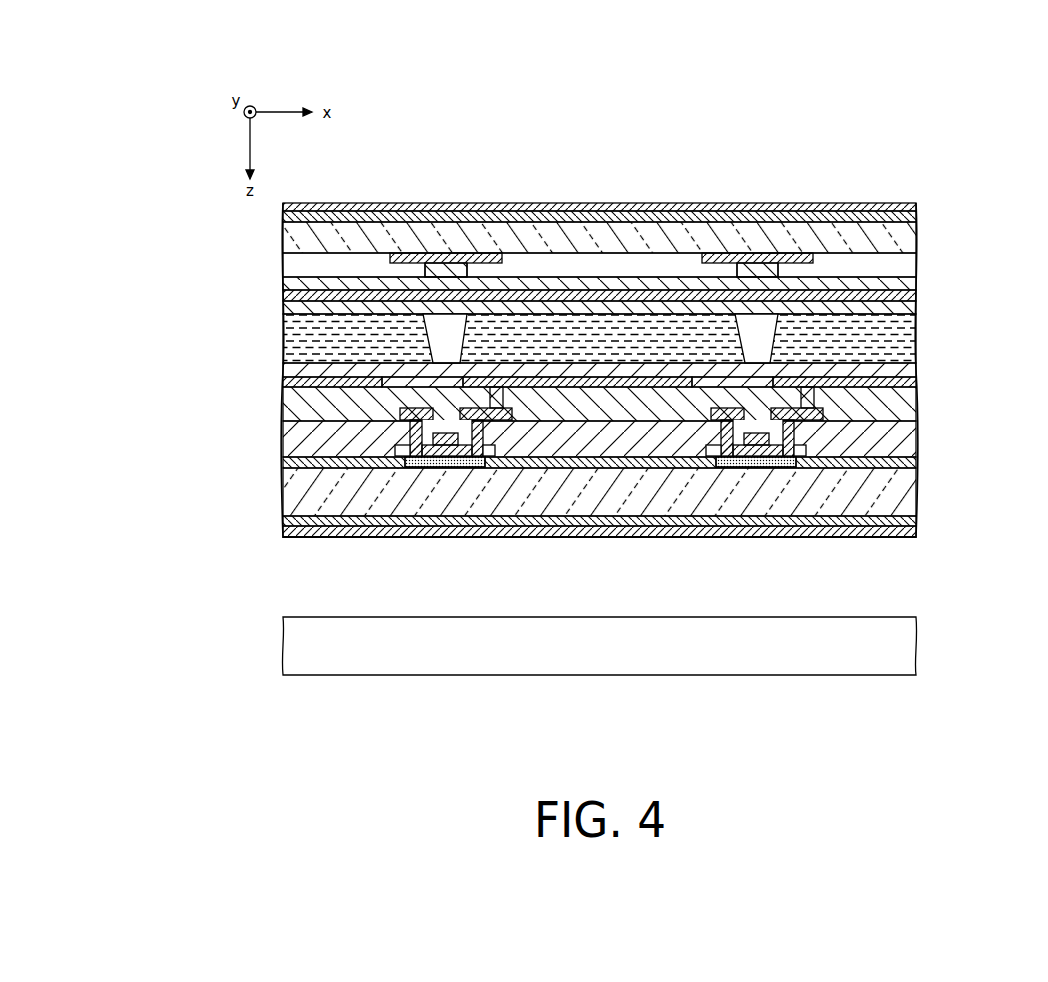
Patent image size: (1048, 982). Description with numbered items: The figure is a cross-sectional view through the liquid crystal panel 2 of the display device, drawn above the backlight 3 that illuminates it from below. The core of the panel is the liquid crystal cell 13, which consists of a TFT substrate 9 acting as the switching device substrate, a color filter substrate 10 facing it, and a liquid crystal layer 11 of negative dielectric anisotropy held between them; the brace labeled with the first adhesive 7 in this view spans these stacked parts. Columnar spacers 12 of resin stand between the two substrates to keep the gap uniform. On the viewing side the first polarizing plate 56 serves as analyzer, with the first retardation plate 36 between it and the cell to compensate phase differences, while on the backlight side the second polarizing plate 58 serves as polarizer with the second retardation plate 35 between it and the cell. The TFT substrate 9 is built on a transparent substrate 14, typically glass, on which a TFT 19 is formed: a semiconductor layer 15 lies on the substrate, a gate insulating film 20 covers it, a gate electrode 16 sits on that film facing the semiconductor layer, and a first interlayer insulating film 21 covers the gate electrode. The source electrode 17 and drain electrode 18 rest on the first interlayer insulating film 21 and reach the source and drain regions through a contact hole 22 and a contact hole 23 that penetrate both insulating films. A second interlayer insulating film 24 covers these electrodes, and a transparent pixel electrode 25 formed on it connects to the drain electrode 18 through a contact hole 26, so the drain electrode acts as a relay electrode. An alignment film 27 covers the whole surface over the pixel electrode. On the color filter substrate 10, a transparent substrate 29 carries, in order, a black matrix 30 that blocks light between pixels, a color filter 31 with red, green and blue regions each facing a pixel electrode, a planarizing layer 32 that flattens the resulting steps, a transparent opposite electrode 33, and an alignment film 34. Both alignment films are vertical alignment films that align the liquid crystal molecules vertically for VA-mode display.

The liquid crystal panel 2 is at (689, 108).
The backlight 3 is at (592, 660).
The first adhesive 7 is at (225, 252).
The TFT substrate 9 is at (268, 362).
The color filter substrate 10 is at (268, 220).
The liquid crystal layer 11 is at (568, 264).
The columnar spacer 12 is at (756, 330).
The liquid crystal cell 13 is at (601, 186).
The transparent substrate 14 is at (903, 493).
The semiconductor layer 15 is at (421, 456).
The gate electrode 16 is at (446, 441).
The source electrode 17 is at (405, 413).
The drain electrode 18 is at (482, 414).
The TFT 19 is at (574, 500).
The gate insulating film 20 is at (905, 462).
The first interlayer insulating film 21 is at (903, 440).
The contact hole 22 is at (417, 433).
The contact hole 23 is at (483, 437).
The second interlayer insulating film 24 is at (903, 400).
The pixel electrode 25 is at (607, 378).
The contact hole 26 is at (503, 392).
The alignment film 27 is at (905, 373).
The transparent substrate 29 is at (897, 235).
The black matrix 30 is at (446, 258).
The color filter 31 is at (539, 268).
The planarizing layer 32 is at (903, 284).
The opposite electrode 33 is at (903, 296).
The alignment film 34 is at (905, 306).
The second retardation plate 35 is at (905, 520).
The first retardation plate 36 is at (908, 216).
The first polarizing plate 56 is at (918, 206).
The second polarizing plate 58 is at (905, 531).